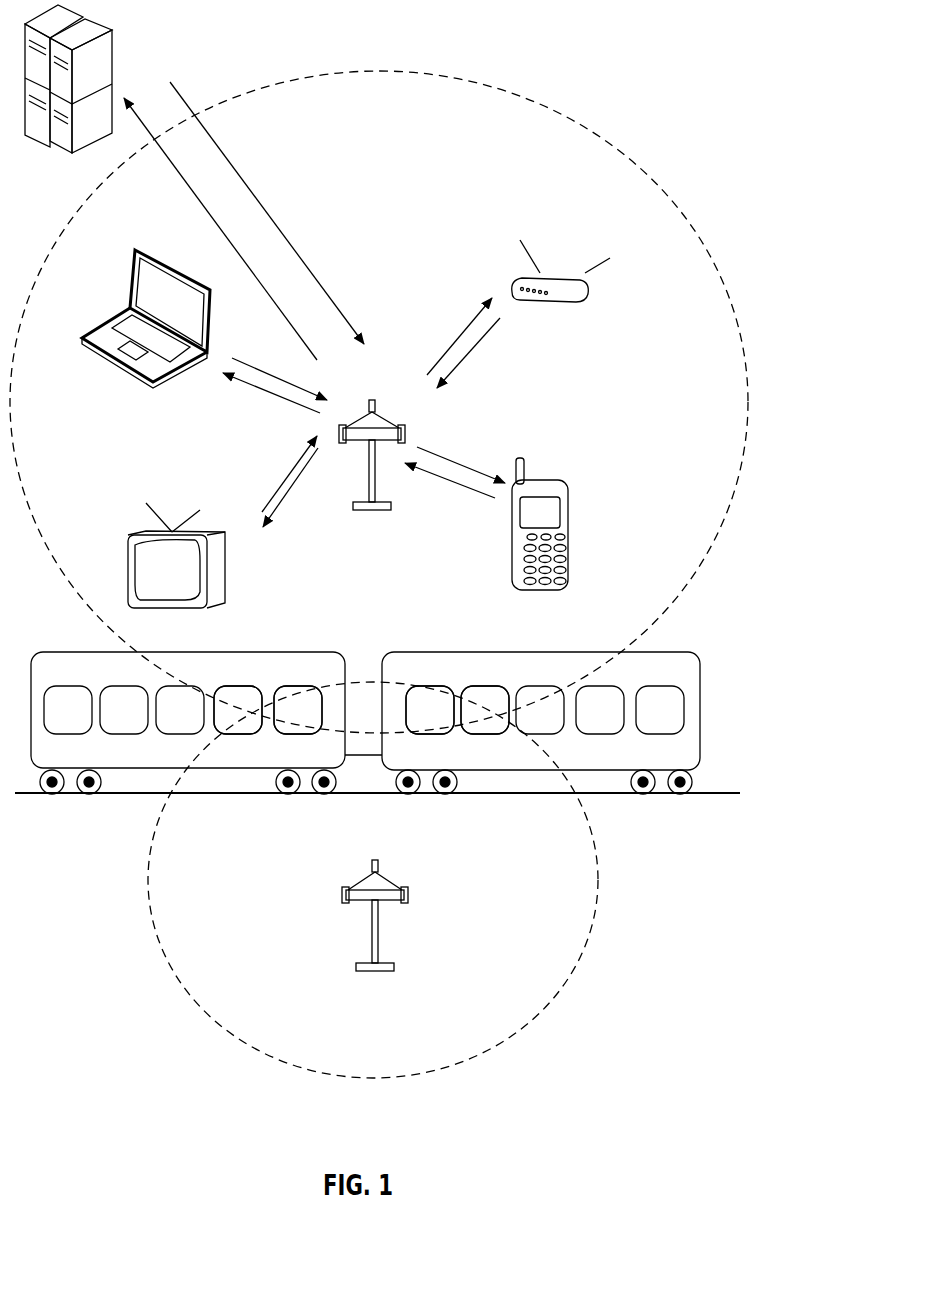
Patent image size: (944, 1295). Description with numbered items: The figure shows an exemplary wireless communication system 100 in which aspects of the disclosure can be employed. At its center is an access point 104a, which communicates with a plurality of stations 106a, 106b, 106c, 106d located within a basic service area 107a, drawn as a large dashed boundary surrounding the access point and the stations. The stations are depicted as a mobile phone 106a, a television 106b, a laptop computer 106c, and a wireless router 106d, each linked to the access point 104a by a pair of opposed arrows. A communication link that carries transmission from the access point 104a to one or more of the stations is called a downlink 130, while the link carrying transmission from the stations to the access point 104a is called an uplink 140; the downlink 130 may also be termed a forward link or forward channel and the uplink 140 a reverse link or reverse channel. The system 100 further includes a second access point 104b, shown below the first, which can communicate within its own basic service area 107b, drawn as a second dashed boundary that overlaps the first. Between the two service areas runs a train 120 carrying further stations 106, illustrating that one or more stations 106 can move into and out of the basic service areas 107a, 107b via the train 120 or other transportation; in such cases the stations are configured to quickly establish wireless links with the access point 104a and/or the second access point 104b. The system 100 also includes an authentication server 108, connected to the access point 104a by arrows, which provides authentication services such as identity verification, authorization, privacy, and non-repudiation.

The wireless communication system 100 is at (619, 53).
The access point 104a is at (372, 398).
The second access point 104b is at (375, 860).
The stations 106 is at (242, 670).
The station 106a is at (542, 480).
The station 106b is at (216, 533).
The station 106c is at (146, 250).
The station 106d is at (572, 277).
The basic service area 107a is at (694, 229).
The basic service area 107b is at (594, 845).
The authentication server 108 is at (118, 33).
The train 120 is at (700, 668).
The downlink 130 is at (444, 455).
The uplink 140 is at (440, 468).